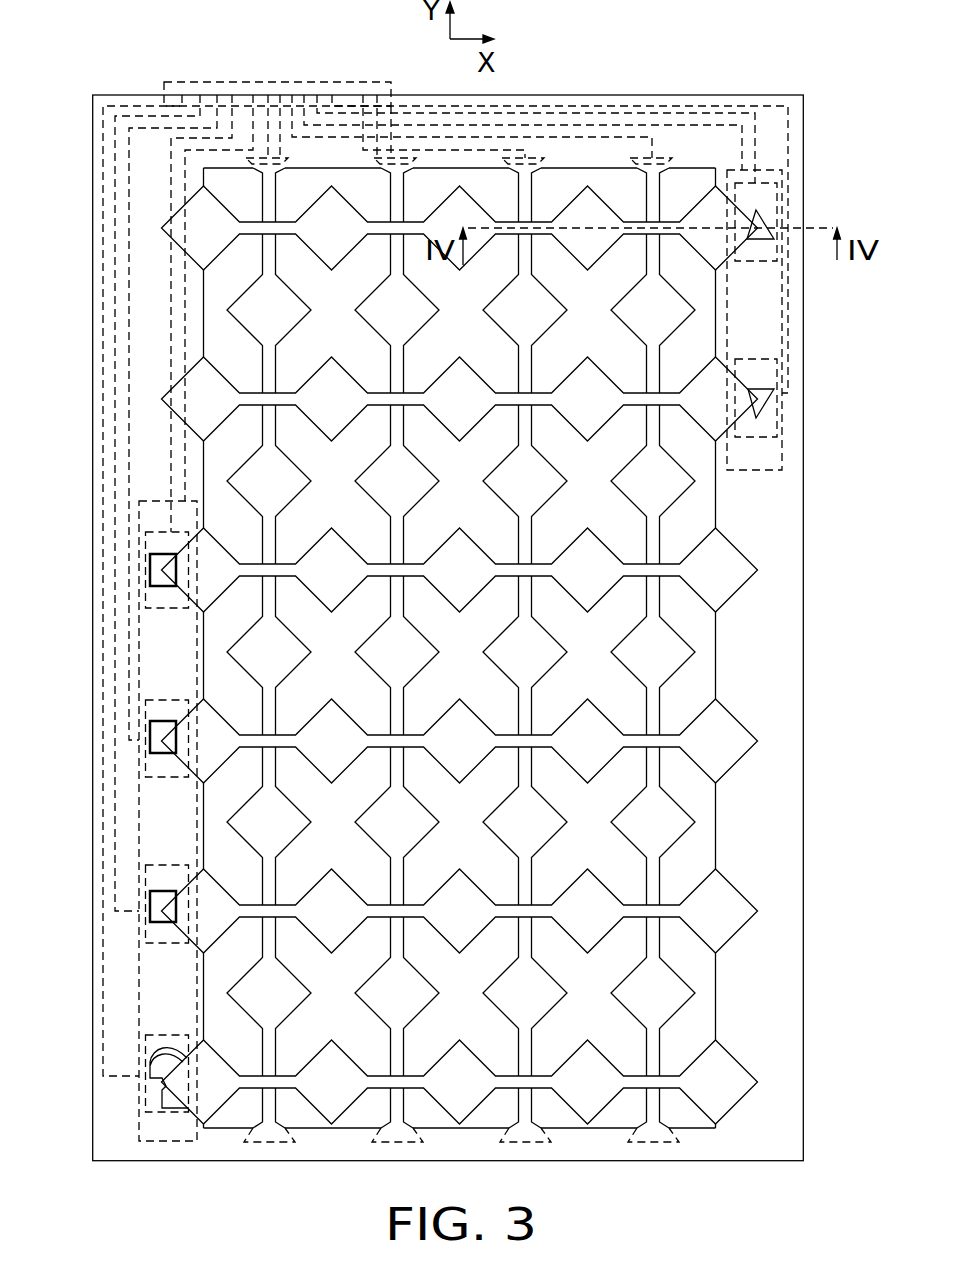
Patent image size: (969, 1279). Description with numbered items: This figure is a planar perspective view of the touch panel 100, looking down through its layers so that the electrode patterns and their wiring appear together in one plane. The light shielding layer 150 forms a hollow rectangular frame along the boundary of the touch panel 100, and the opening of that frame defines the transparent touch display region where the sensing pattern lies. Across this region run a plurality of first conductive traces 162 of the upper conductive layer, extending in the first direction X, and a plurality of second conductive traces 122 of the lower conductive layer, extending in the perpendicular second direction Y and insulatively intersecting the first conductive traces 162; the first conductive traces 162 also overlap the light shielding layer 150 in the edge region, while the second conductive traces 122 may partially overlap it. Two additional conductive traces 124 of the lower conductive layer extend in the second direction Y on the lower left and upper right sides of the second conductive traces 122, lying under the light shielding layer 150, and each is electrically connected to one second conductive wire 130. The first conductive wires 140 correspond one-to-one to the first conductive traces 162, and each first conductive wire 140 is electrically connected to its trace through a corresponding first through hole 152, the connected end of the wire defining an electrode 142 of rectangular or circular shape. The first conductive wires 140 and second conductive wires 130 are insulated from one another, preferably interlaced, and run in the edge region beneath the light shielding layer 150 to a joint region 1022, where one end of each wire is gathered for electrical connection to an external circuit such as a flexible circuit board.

The touch panel 100 is at (158, 45).
The joint region 1022 is at (282, 81).
The second conductive wires 130 is at (185, 180).
The first through hole 152 is at (732, 250).
The electrode 142 is at (753, 255).
The first conductive wires 140 is at (790, 325).
The additional conductive traces 124 is at (765, 452).
The first conductive traces 162 is at (717, 570).
The second conductive traces 122 is at (658, 649).
The light shielding layer 150 is at (762, 825).